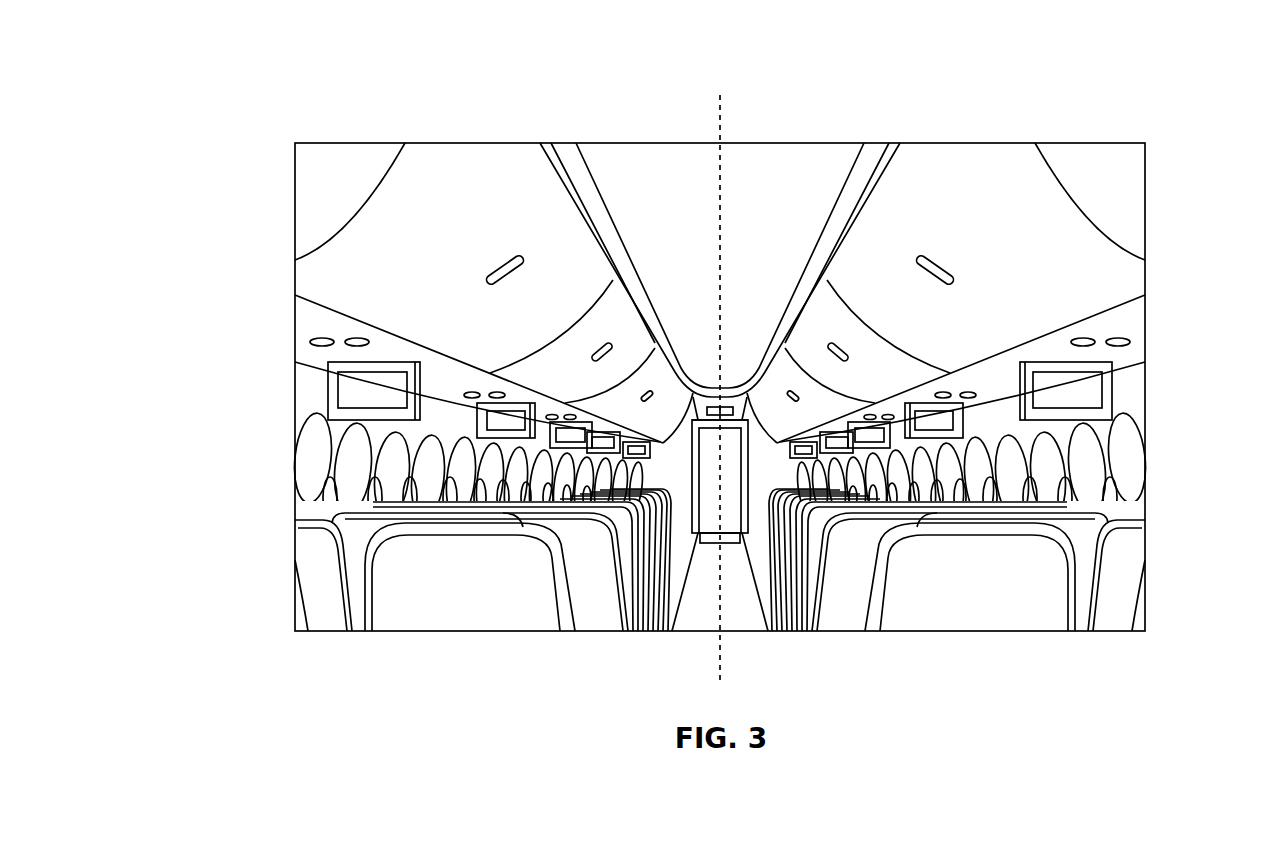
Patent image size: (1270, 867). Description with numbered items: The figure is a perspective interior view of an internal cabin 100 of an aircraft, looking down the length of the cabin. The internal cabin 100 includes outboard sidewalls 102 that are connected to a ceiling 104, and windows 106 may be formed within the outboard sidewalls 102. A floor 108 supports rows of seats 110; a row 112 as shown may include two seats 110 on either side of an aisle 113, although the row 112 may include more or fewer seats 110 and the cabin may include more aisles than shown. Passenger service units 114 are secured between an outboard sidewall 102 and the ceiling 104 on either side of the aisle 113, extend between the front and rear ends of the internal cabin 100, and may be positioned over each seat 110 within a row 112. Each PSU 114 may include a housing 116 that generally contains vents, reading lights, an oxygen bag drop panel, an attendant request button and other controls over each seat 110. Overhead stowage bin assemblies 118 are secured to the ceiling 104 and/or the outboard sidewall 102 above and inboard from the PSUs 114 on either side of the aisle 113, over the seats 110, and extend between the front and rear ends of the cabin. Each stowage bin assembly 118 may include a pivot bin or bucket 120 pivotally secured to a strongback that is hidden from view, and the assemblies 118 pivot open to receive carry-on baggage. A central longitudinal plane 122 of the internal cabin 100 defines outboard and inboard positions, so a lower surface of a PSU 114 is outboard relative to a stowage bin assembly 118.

The internal cabin 100 is at (246, 102).
The outboard sidewall 102 is at (305, 392).
The ceiling 104 is at (781, 143).
The window 106 is at (318, 490).
The floor 108 is at (708, 613).
The seat 110 is at (470, 617).
The row 112 is at (300, 592).
The aisle 113 is at (732, 613).
The passenger service unit 114 is at (323, 345).
The housing 116 is at (305, 333).
The overhead stowage bin assembly 118 is at (402, 195).
The pivot bin 120 is at (468, 160).
The central longitudinal plane 122 is at (716, 102).